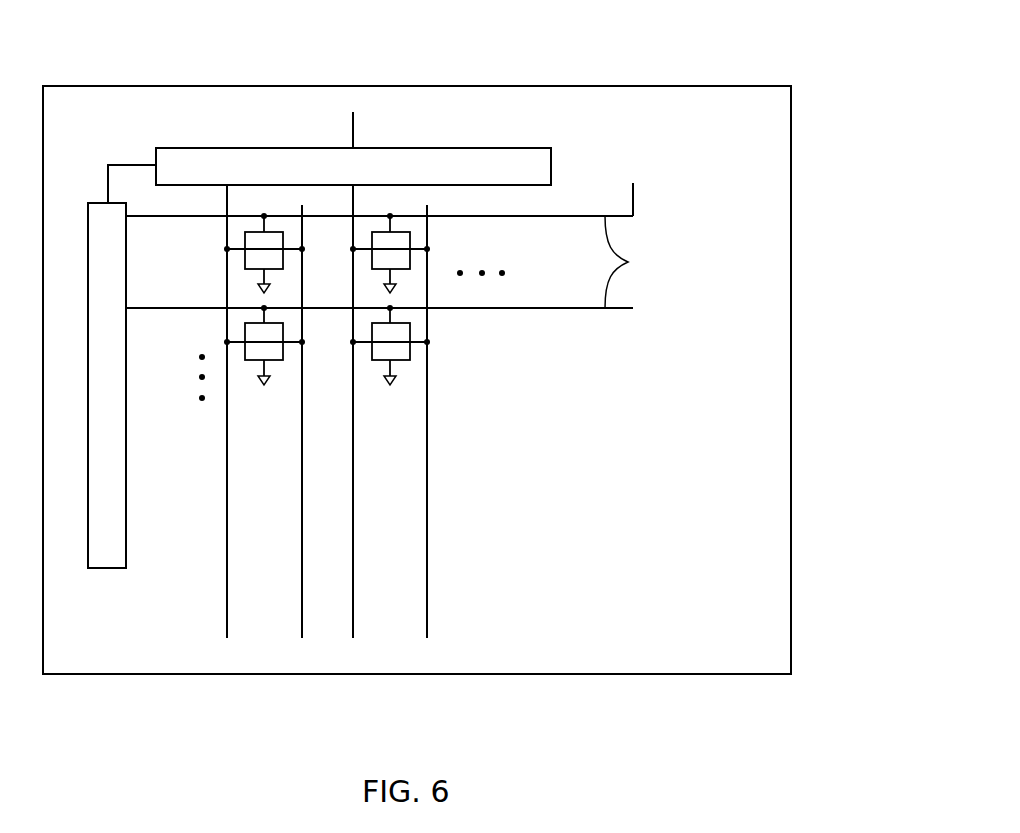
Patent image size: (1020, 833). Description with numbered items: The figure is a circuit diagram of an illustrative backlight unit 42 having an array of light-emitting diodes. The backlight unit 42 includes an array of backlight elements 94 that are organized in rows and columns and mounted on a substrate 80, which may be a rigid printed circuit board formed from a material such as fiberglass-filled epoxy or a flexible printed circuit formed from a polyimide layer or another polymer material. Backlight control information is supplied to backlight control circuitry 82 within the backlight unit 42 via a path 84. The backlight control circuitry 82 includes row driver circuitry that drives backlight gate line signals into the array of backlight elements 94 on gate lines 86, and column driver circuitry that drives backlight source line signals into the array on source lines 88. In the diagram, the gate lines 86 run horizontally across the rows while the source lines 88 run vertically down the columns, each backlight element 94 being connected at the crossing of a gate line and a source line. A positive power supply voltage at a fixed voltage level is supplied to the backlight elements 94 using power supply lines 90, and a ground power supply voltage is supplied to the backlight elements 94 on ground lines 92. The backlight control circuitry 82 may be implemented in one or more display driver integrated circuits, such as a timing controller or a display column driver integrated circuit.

The backlight unit 42 is at (632, 58).
The substrate 80 is at (168, 660).
The backlight control circuitry 82 is at (202, 156).
The path 84 is at (353, 125).
The gate lines 86 is at (393, 250).
The source lines 88 is at (227, 531).
The power supply lines 90 is at (634, 203).
The ground lines 92 is at (395, 288).
The backlight elements 94 is at (252, 260).